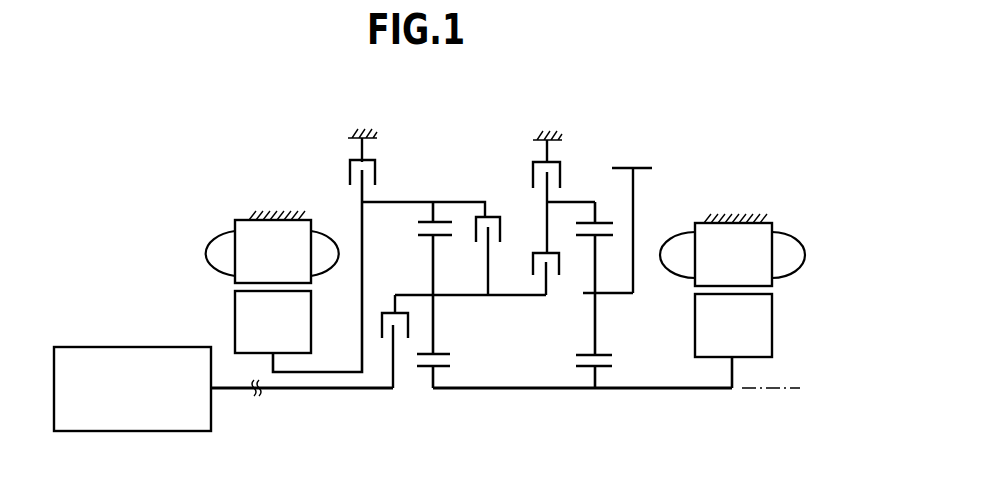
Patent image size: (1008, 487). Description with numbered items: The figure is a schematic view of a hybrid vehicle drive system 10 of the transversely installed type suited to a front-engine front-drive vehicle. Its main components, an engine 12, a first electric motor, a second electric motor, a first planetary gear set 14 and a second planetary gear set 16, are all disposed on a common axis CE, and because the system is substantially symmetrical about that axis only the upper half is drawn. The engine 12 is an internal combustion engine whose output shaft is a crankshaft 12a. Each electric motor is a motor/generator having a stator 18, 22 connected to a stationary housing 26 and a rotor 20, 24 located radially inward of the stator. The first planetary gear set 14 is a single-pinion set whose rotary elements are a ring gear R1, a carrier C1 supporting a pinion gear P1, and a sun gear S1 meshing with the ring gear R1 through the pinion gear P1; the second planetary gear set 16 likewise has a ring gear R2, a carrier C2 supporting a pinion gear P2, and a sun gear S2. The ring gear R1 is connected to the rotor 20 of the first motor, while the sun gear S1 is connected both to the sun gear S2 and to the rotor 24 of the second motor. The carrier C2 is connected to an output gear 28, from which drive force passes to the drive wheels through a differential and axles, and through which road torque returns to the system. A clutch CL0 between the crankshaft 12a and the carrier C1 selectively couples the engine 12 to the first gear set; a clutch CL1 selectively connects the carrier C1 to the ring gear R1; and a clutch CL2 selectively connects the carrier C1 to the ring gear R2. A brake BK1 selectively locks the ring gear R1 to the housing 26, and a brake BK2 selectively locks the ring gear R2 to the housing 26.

The hybrid vehicle drive system 10 is at (718, 117).
The engine 12 is at (90, 352).
The crankshaft 12a is at (245, 393).
The first planetary gear set 14 is at (454, 322).
The second planetary gear set 16 is at (578, 287).
The stator 18 is at (240, 279).
The rotor 20 is at (240, 322).
The stator 22 is at (766, 282).
The rotor 24 is at (766, 326).
The housing 26 is at (278, 214).
The output gear 28 is at (641, 167).
The brake BK1 is at (348, 171).
The brake BK2 is at (533, 172).
The clutch CL0 is at (383, 318).
The clutch CL1 is at (505, 226).
The clutch CL2 is at (531, 262).
The ring gear R1 is at (419, 222).
The ring gear R2 is at (598, 220).
The carrier C1 is at (451, 291).
The carrier C2 is at (608, 296).
The pinion gear P1 is at (443, 354).
The pinion gear P2 is at (590, 354).
The sun gear S1 is at (432, 397).
The sun gear S2 is at (593, 397).
The common axis CE is at (631, 389).